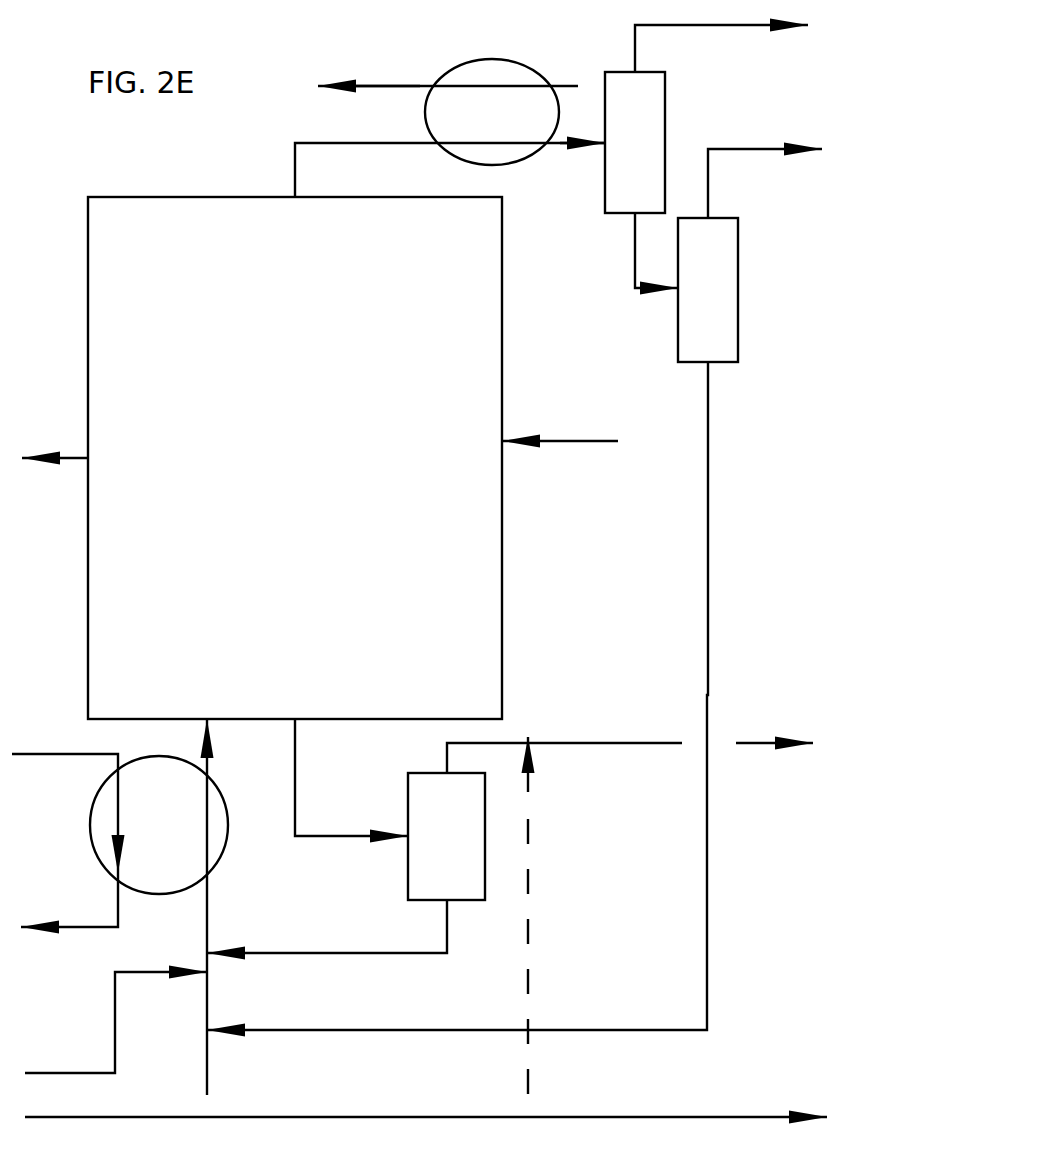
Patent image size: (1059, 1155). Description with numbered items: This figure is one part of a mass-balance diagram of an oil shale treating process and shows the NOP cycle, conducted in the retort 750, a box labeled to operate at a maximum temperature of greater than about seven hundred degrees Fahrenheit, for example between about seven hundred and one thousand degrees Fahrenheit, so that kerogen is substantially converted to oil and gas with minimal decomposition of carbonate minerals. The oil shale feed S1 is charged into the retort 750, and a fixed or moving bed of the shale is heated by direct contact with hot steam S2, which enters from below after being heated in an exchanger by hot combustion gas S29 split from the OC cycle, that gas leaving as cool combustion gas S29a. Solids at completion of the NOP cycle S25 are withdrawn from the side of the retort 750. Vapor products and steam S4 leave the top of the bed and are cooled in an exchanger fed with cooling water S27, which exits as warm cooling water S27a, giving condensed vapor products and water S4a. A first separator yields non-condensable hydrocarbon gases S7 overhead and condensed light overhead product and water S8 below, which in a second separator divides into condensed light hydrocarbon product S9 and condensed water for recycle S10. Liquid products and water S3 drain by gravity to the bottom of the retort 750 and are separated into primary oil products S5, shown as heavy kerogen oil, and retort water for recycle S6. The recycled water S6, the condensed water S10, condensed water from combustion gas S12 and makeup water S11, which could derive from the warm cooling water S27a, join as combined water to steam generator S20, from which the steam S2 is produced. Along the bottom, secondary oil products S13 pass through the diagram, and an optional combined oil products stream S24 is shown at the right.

The retort (NOP) 750 is at (295, 446).
The oil shale feed S1 is at (560, 431).
The hot steam S2 is at (223, 759).
The liquid products and water S3 is at (351, 781).
The vapor products and steam S4 is at (450, 167).
The condensed vapor products and water S4a is at (575, 156).
The primary oil products S5 is at (564, 915).
The retort water for recycle S6 is at (327, 930).
The non-condensable hydrocarbon gases S7 is at (699, 49).
The condensed light overhead product and water S8 is at (641, 254).
The condensed light hydrocarbon product S9 is at (765, 162).
The condensed water for recycle S10 is at (482, 710).
The makeup water S11 is at (231, 1032).
The condensed water from combustion gas S12 is at (116, 1020).
The secondary oil products S13 is at (426, 1127).
The combined water to steam generator S20 is at (230, 880).
The combined oil products S24 is at (774, 754).
The solids at completion of NOP cycle S25 is at (55, 472).
The cooling water S27 is at (453, 78).
The warm cooling water S27a is at (380, 75).
The hot combustion gas split for retort steam exchanger S29 is at (68, 801).
The cool combustion gas from retort steam exchanger S29a is at (69, 903).